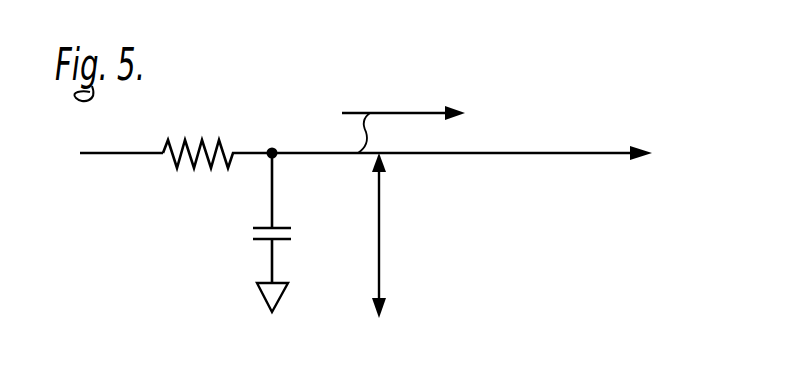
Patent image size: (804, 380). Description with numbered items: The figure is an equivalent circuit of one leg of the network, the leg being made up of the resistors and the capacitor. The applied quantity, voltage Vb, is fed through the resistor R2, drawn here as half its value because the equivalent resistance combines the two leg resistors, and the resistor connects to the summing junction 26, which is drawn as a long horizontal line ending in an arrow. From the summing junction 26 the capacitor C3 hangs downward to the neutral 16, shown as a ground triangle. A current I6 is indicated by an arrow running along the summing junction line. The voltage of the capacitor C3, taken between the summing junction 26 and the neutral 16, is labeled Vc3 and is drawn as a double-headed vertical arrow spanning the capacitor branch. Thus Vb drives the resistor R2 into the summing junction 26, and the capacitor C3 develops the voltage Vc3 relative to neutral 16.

The neutral 16 is at (262, 292).
The summing junction 26 is at (473, 154).
The capacitor C3 is at (248, 235).
The resistor R2 is at (203, 140).
The current I6 is at (393, 113).
The voltage Vb is at (105, 153).
The capacitor voltage Vc3 is at (380, 235).